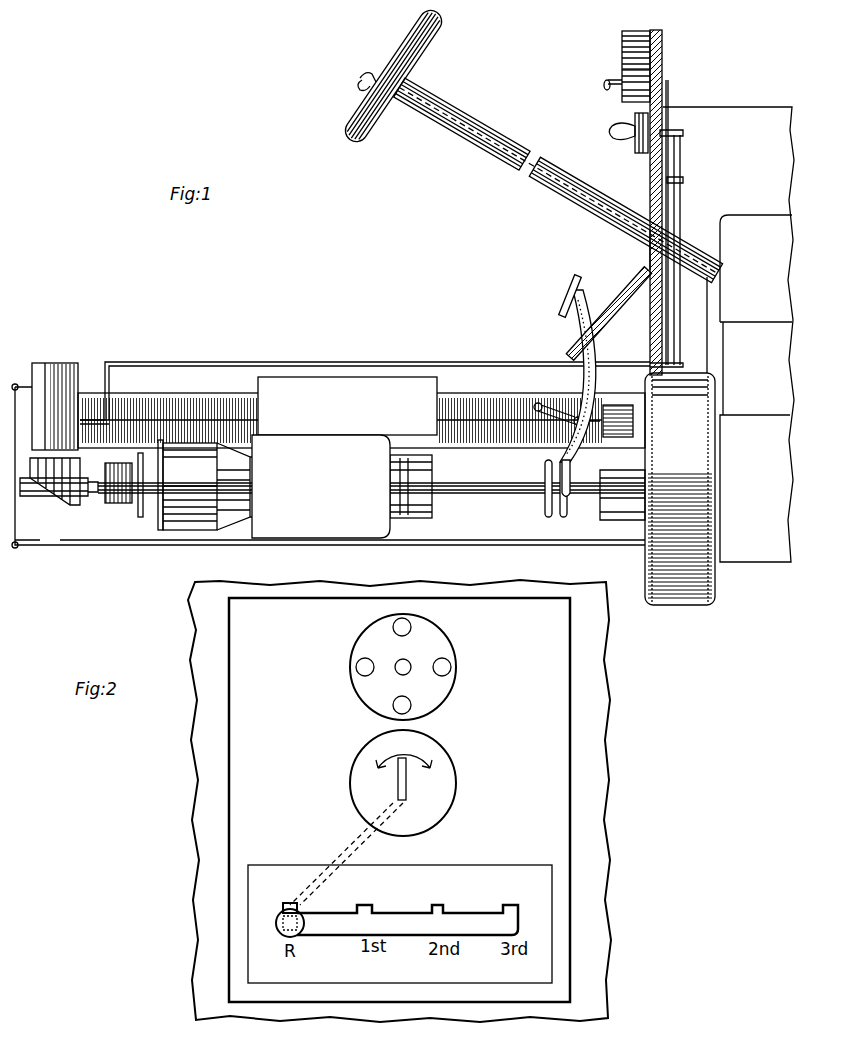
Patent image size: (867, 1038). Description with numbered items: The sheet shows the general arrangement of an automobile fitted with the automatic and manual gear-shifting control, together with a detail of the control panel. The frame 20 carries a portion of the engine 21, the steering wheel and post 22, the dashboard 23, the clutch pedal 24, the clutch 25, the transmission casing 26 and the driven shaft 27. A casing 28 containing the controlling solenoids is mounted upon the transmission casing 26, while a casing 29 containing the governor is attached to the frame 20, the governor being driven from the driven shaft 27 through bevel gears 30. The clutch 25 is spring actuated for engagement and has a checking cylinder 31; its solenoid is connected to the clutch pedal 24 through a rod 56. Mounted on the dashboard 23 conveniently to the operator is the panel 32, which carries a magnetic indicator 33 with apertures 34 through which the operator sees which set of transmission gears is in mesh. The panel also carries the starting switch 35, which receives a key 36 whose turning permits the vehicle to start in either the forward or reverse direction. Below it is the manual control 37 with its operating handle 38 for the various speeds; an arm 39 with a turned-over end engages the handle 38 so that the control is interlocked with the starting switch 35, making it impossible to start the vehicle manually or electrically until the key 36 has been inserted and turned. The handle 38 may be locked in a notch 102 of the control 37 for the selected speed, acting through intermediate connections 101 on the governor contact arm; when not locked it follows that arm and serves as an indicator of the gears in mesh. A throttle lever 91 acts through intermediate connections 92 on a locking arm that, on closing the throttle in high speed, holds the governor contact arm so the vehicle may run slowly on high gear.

In FIG. 1, the frame 20 is at (185, 412).
In FIG. 1, the engine 21 is at (750, 547).
In FIG. 1, the steering wheel and post 22 is at (412, 56).
In FIG. 1, the dashboard 23 is at (650, 252).
In FIG. 2, the dashboard 23 is at (598, 764).
In FIG. 1, the clutch pedal 24 is at (570, 300).
In FIG. 1, the clutch 25 is at (696, 602).
In FIG. 1, the transmission casing 26 is at (307, 527).
In FIG. 1, the driven shaft 27 is at (45, 488).
In FIG. 1, the casing 28 is at (332, 397).
In FIG. 1, the casing 29 is at (46, 372).
In FIG. 1, the bevel gears 30 is at (55, 470).
In FIG. 1, the checking cylinder 31 is at (632, 411).
In FIG. 1, the panel 32 is at (656, 55).
In FIG. 2, the panel 32 is at (399, 800).
In FIG. 1, the magnetic indicator 33 is at (630, 44).
In FIG. 2, the magnetic indicator 33 is at (443, 685).
In FIG. 2, the apertures 34 is at (444, 658).
In FIG. 1, the starting switch 35 is at (625, 91).
In FIG. 2, the starting switch 35 is at (443, 793).
In FIG. 1, the key 36 is at (606, 82).
In FIG. 2, the key 36 is at (400, 781).
In FIG. 1, the manual control 37 is at (645, 151).
In FIG. 2, the manual control 37 is at (487, 882).
In FIG. 1, the operating handle 38 is at (612, 131).
In FIG. 2, the operating handle 38 is at (300, 934).
In FIG. 1, the arm 39 is at (668, 100).
In FIG. 2, the arm 39 is at (343, 849).
In FIG. 1, the rod 56 is at (503, 422).
In FIG. 1, the throttle lever 91 is at (360, 86).
In FIG. 1, the intermediate connections 92 is at (15, 384).
In FIG. 1, the intermediate connections 101 is at (151, 362).
In FIG. 2, the notch 102 is at (288, 902).